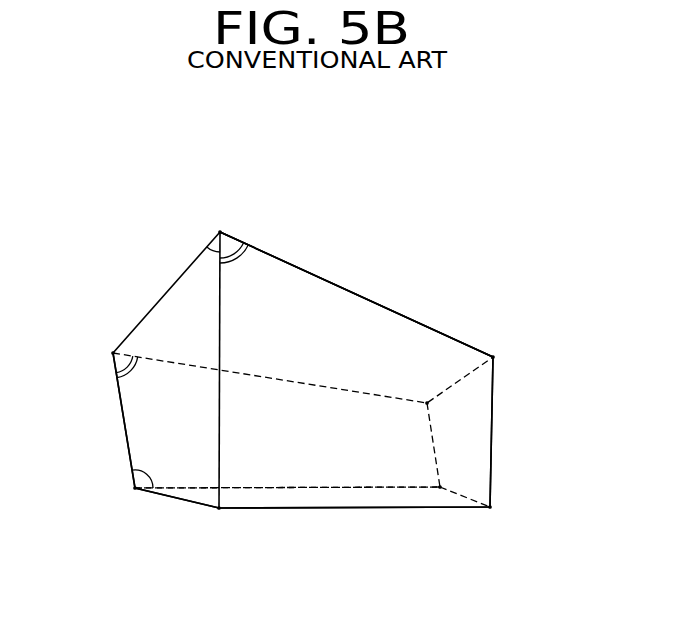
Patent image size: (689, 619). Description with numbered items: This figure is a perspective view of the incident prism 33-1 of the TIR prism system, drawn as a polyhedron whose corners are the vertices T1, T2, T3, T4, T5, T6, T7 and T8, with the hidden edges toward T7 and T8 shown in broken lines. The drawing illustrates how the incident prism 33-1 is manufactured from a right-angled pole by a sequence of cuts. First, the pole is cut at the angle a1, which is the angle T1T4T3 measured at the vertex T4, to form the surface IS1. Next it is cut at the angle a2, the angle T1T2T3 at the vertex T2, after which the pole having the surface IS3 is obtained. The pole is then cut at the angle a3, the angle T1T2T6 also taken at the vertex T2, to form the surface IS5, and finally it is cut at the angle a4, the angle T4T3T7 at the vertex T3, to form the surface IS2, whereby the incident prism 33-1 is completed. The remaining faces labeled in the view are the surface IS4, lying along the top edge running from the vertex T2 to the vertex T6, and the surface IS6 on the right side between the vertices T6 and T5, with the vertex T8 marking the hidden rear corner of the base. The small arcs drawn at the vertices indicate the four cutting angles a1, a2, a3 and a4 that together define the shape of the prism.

The incident prism 33-1 is at (317, 278).
The surface IS1 is at (202, 495).
The surface IS2 is at (178, 473).
The surface IS3 is at (135, 412).
The surface IS4 is at (362, 313).
The surface IS5 is at (345, 498).
The surface IS6 is at (485, 432).
The vertex T1 is at (216, 521).
The vertex T2 is at (214, 221).
The vertex T3 is at (99, 350).
The vertex T4 is at (124, 494).
The vertex T5 is at (501, 518).
The vertex T6 is at (505, 350).
The vertex T7 is at (417, 390).
The vertex T8 is at (426, 474).
The angle a1 is at (153, 469).
The angle a2 is at (206, 266).
The angle a3 is at (241, 265).
The angle a4 is at (140, 374).